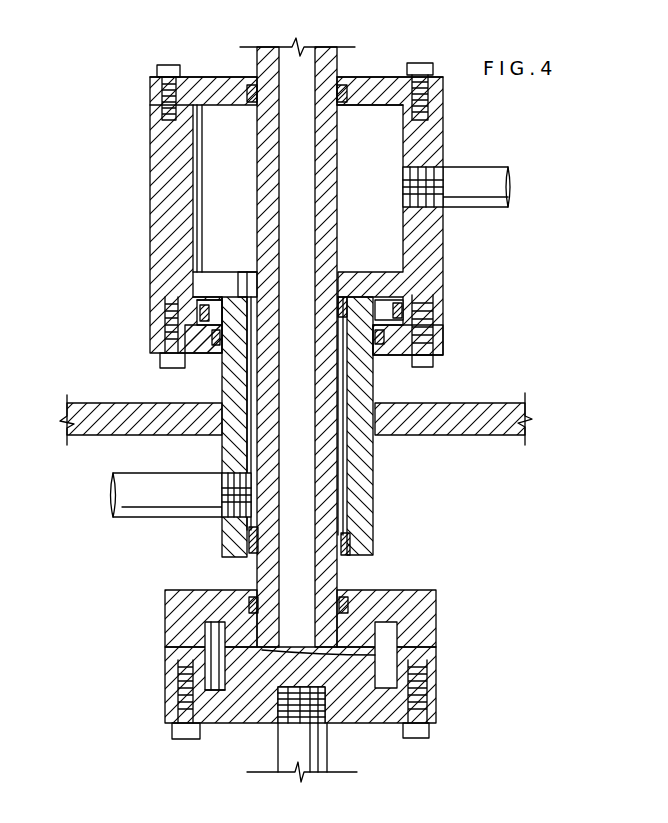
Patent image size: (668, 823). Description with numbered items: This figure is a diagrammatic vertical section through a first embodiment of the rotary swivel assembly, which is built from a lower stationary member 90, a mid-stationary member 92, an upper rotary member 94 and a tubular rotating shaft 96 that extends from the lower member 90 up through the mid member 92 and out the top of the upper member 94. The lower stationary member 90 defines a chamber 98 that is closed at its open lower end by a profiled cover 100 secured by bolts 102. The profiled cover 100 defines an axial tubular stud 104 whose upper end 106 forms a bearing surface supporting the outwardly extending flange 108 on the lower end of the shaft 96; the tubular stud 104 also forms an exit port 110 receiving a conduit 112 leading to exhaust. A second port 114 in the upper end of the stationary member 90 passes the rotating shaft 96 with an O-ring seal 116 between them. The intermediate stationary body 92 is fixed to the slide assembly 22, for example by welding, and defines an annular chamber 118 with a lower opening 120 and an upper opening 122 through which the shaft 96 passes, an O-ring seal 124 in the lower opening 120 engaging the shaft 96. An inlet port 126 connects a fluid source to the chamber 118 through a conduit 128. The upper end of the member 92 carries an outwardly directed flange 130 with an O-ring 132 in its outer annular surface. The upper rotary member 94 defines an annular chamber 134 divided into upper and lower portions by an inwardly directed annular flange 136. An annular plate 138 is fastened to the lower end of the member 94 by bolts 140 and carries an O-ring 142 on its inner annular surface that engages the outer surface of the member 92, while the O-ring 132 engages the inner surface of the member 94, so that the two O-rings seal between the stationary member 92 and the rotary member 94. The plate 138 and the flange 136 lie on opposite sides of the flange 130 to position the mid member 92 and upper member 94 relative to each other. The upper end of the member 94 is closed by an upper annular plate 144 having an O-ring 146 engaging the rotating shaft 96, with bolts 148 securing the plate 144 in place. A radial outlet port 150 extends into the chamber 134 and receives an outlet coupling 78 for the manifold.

The slide assembly 22 is at (455, 436).
The outlet coupling 78 is at (493, 180).
The lower stationary member 90 is at (437, 606).
The mid-stationary member 92 is at (373, 521).
The upper rotary member 94 is at (445, 280).
The tubular rotating shaft 96 is at (345, 575).
The chamber 98 is at (385, 635).
The profiled cover 100 is at (372, 725).
The bolts 102 is at (432, 730).
The axial tubular stud 104 is at (385, 653).
The upper end 106 is at (260, 645).
The outwardly extending flange 108 is at (205, 630).
The exit port 110 is at (280, 700).
The conduit 112 is at (338, 752).
The second port 114 is at (257, 598).
The O-ring seal 116 is at (248, 600).
The annular chamber 118 is at (342, 495).
The lower opening 120 is at (360, 553).
The upper opening 122 is at (342, 300).
The O-ring seal 124 is at (248, 540).
The inlet port 126 is at (226, 478).
The conduit 128 is at (125, 487).
The outwardly directed flange 130 is at (205, 300).
The O-ring 132 is at (200, 312).
The annular chamber 134 is at (220, 163).
The inwardly directed annular flange 136 is at (232, 268).
The annular plate 138 is at (200, 340).
The bolts 140 is at (170, 358).
The O-ring 142 is at (395, 336).
The upper annular plate 144 is at (232, 80).
The O-ring 146 is at (250, 86).
The bolts 148 is at (165, 70).
The radial outlet port 150 is at (425, 192).